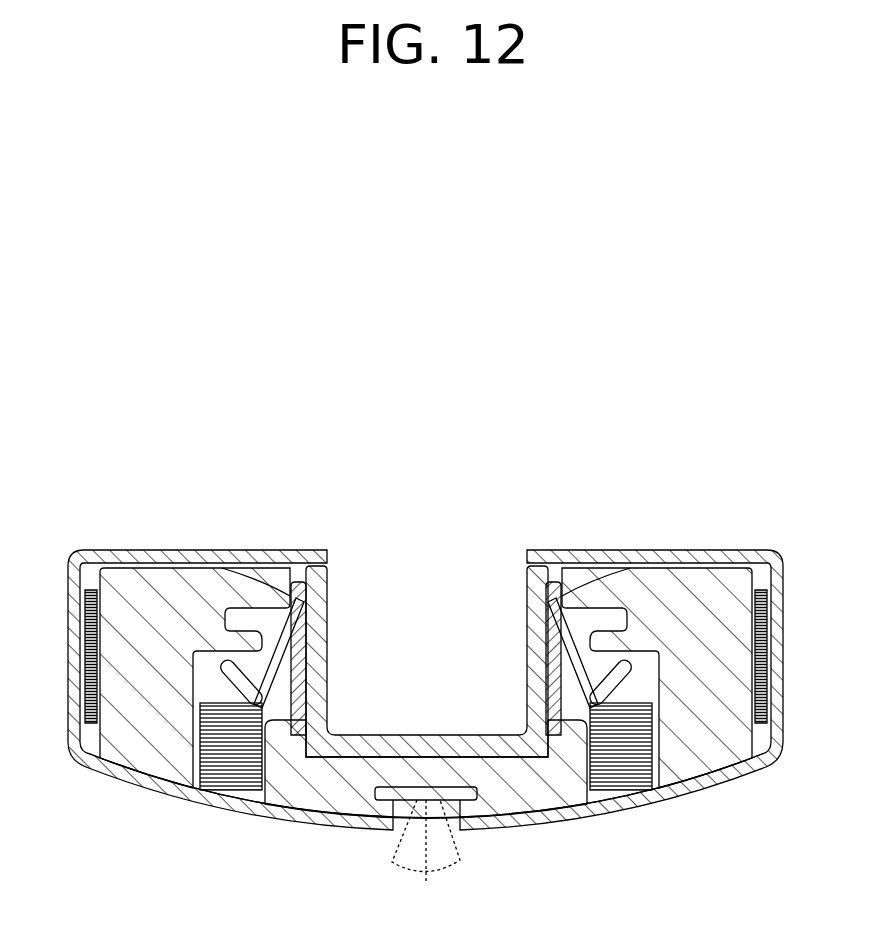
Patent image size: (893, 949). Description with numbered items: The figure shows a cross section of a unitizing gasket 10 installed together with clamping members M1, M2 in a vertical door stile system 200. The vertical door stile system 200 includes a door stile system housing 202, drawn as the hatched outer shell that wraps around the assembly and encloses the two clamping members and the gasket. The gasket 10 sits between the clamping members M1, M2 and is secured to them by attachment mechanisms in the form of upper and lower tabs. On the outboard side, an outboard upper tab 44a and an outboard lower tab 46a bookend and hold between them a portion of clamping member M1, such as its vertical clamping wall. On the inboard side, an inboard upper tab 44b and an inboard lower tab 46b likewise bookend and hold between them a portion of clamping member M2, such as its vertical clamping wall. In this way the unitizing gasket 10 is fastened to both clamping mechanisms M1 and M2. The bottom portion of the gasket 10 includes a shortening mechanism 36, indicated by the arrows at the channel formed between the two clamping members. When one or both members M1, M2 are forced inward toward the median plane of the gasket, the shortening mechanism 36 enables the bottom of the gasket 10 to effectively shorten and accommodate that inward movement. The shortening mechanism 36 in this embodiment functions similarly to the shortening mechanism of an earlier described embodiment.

The vertical door stile system 200 is at (152, 514).
The door stile system housing 202 is at (102, 770).
The unitizing gasket 10 is at (522, 637).
The shortening mechanism 36 is at (515, 727).
The clamping member M1 is at (212, 550).
The clamping member M2 is at (560, 602).
The outboard upper tab 44a is at (290, 578).
The inboard upper tab 44b is at (570, 580).
The outboard lower tab 46a is at (293, 735).
The inboard lower tab 46b is at (560, 735).